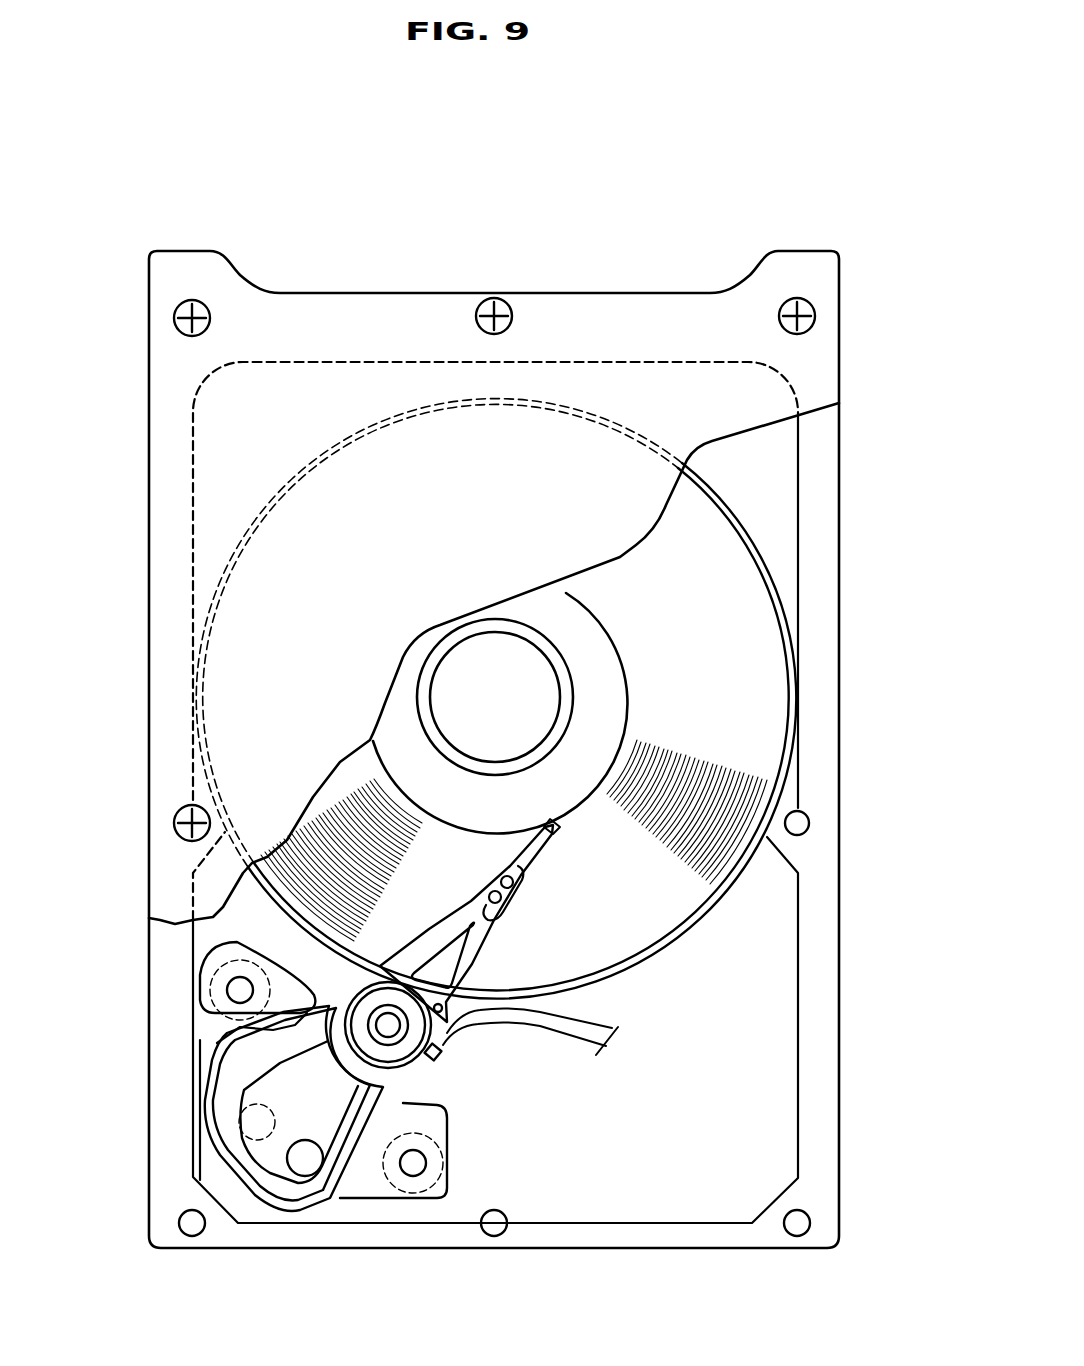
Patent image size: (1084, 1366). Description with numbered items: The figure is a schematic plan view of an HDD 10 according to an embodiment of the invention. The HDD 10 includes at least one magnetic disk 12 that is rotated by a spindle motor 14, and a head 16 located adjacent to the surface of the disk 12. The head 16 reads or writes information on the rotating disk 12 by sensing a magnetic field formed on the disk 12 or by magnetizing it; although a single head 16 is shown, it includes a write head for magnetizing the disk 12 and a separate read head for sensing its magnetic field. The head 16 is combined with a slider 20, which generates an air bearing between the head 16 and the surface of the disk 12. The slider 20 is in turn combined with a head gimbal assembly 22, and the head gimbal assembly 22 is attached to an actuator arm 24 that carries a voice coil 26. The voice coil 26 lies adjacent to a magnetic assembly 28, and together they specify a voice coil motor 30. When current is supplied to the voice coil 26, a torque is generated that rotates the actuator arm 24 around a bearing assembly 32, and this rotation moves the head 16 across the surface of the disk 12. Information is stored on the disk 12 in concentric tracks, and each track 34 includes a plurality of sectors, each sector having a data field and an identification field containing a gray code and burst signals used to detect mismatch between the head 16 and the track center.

The HDD 10 is at (841, 225).
The magnetic disk 12 is at (753, 630).
The spindle motor 14 is at (470, 675).
The head 16 is at (557, 835).
The slider 20 is at (521, 872).
The head gimbal assembly 22 is at (488, 961).
The actuator arm 24 is at (300, 1042).
The voice coil 26 is at (227, 1113).
The magnetic assembly 28 is at (240, 1057).
The voice coil motor 30 is at (358, 1180).
The bearing assembly 32 is at (400, 1035).
The track 34 is at (353, 817).